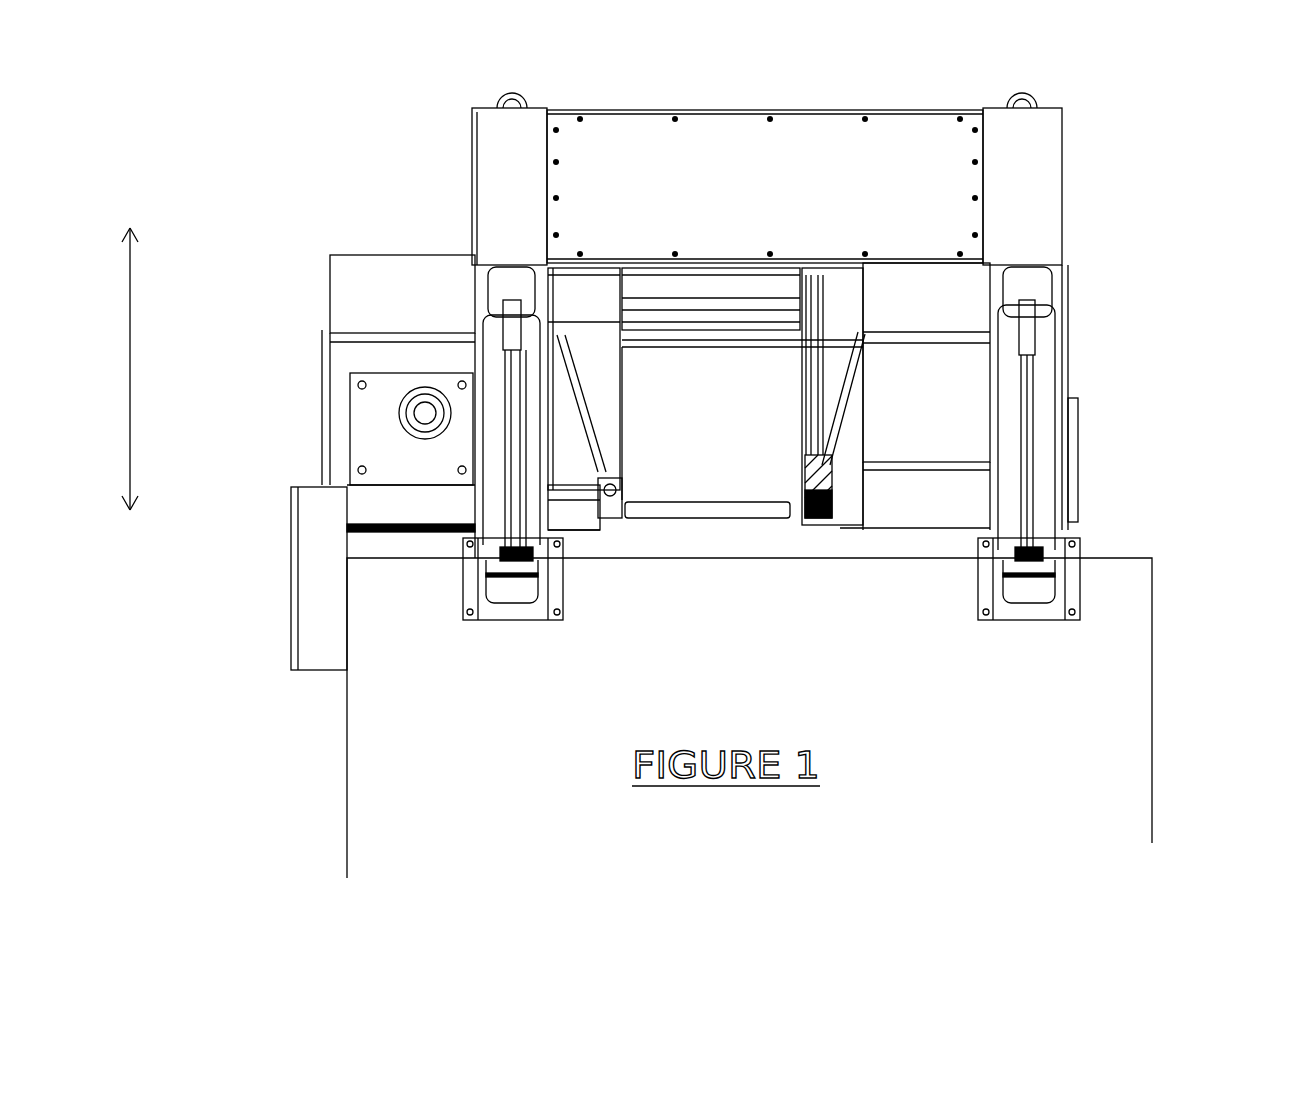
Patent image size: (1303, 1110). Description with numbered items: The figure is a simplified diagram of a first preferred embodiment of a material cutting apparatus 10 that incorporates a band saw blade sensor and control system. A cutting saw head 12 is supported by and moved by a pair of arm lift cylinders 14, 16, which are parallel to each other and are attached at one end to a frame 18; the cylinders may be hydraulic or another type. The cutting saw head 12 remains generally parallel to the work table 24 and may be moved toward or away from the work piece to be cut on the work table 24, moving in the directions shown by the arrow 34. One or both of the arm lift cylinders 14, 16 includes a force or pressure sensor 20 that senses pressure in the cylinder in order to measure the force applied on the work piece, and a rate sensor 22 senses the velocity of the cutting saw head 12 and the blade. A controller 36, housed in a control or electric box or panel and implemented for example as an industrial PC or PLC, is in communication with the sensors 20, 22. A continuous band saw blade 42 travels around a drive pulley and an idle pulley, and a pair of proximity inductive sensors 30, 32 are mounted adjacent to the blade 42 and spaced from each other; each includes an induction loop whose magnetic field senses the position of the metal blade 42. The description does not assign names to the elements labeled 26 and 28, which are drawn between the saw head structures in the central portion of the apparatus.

The material cutting apparatus 10 is at (470, 106).
The cutting saw head 12 is at (387, 255).
The arm lift cylinder 14 is at (1040, 483).
The arm lift cylinder 16 is at (500, 548).
The frame 18 is at (1043, 167).
The force or pressure sensor 20 is at (535, 565).
The rate sensor 22 is at (555, 540).
The work table 24 is at (1152, 725).
The support strut 26 is at (800, 473).
The central housing 28 is at (622, 383).
The proximity inductive sensor 30 is at (820, 525).
The proximity inductive sensor 32 is at (610, 515).
The arrow 34 is at (130, 360).
The controller 36 is at (291, 602).
The continuous band saw blade 42 is at (713, 518).